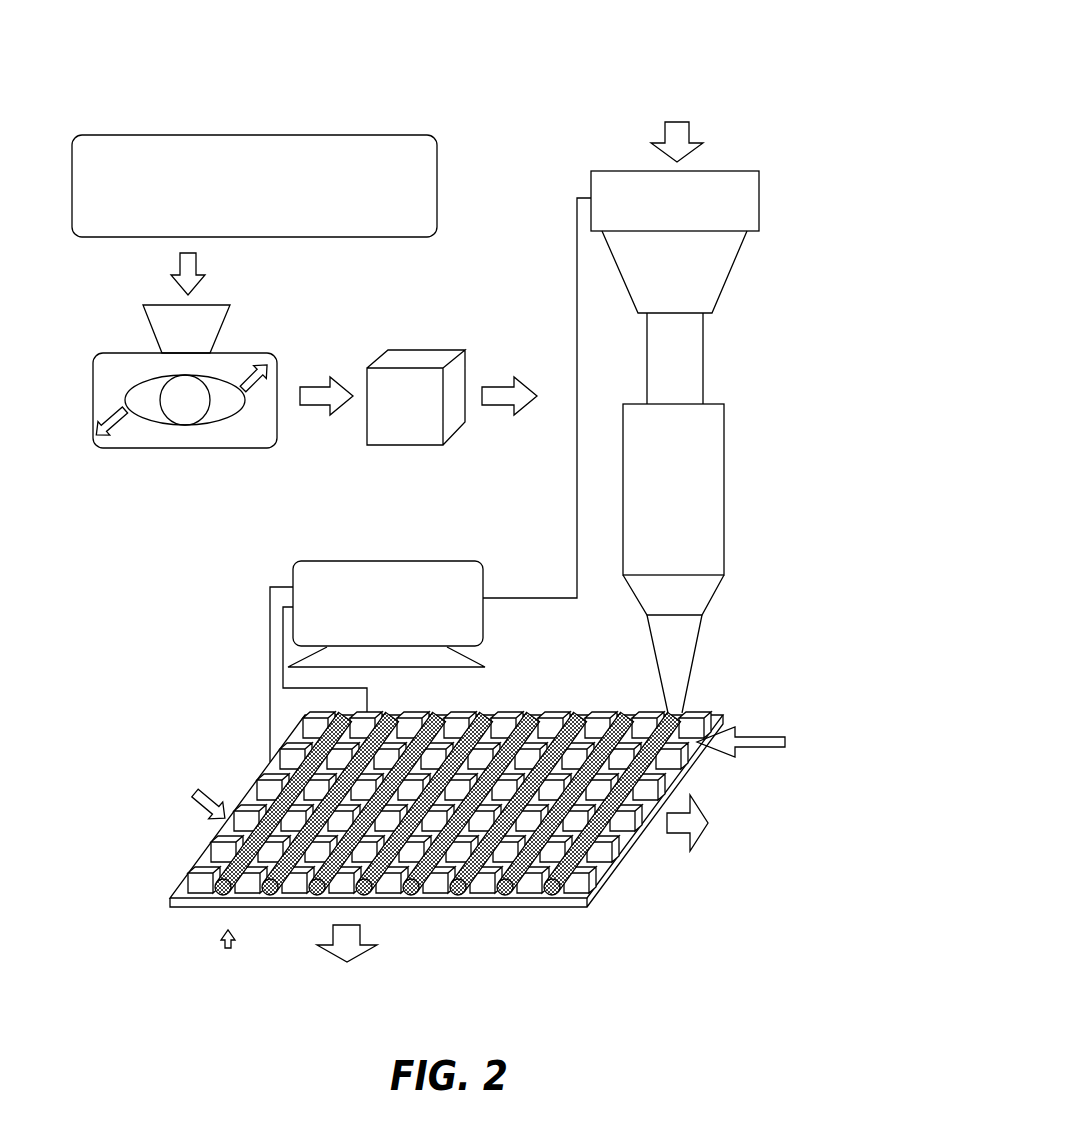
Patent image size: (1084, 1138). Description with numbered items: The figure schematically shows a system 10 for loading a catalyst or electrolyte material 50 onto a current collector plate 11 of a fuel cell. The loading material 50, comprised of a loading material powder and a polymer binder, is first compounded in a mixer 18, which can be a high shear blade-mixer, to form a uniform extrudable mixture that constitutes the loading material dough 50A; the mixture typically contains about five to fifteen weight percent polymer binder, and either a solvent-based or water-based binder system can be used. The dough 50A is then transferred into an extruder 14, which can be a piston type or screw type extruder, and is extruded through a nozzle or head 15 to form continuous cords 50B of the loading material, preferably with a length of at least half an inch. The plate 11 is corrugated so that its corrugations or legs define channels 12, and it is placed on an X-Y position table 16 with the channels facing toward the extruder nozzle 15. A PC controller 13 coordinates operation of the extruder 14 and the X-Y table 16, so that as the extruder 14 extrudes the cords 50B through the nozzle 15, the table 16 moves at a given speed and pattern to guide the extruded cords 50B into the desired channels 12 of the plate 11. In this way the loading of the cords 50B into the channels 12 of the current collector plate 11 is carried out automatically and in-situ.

The system 10 is at (498, 101).
The catalyst or electrolyte material 50 is at (377, 222).
The mixer 18 is at (235, 352).
The loading material dough 50A is at (417, 355).
The extruder 14 is at (693, 363).
The extruder nozzle 15 is at (678, 634).
The PC controller 13 is at (400, 570).
The current collector plate 11 is at (207, 864).
The channels 12 is at (237, 895).
The X-Y position table 16 is at (548, 902).
The cords 50B is at (683, 732).